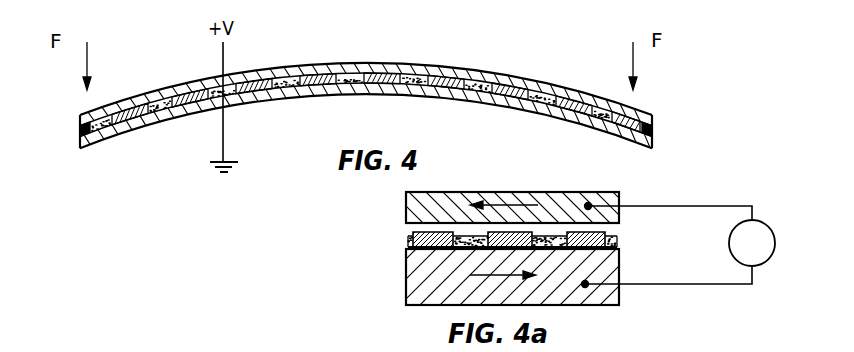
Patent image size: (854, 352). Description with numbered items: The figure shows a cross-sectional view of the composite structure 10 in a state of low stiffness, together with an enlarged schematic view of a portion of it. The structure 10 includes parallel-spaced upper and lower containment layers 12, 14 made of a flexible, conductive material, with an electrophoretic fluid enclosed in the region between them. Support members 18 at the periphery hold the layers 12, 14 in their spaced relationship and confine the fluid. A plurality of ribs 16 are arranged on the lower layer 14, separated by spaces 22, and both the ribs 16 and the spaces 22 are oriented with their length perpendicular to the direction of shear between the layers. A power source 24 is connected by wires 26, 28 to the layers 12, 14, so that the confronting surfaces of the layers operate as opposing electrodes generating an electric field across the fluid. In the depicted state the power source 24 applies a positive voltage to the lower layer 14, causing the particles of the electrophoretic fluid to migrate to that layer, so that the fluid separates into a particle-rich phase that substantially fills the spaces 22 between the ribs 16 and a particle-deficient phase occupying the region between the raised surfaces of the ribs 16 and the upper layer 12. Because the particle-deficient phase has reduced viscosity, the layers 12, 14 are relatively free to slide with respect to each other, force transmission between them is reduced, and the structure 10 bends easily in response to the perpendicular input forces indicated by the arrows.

In FIG. 4, the composite structure 10 is at (320, 52).
In FIG. 4, the upper containment layer 12 is at (452, 67).
In FIG. 4a, the upper containment layer 12 is at (406, 205).
In FIG. 4, the lower containment layer 14 is at (427, 98).
In FIG. 4a, the lower containment layer 14 is at (406, 282).
In FIG. 4, the ribs 16 is at (131, 131).
In FIG. 4a, the ribs 16 is at (438, 232).
In FIG. 4, the support members 18 is at (80, 126).
In FIG. 4, the spaces 22 is at (110, 139).
In FIG. 4a, the spaces 22 is at (408, 240).
In FIG. 4a, the power source 24 is at (776, 243).
In FIG. 4, the wire 26 is at (223, 49).
In FIG. 4a, the wire 26 is at (698, 206).
In FIG. 4, the wire 28 is at (224, 144).
In FIG. 4a, the wire 28 is at (688, 285).